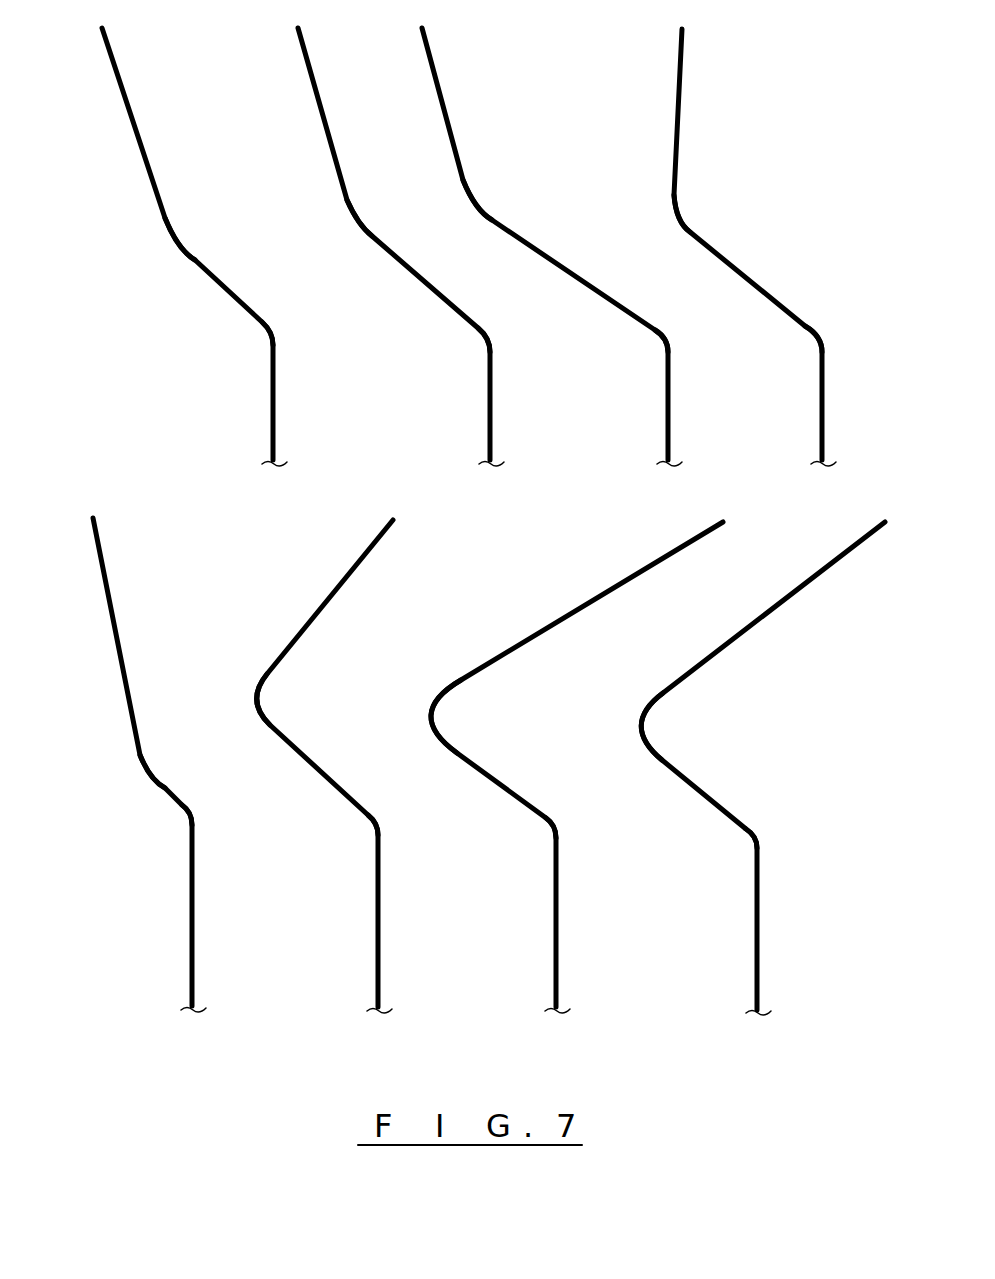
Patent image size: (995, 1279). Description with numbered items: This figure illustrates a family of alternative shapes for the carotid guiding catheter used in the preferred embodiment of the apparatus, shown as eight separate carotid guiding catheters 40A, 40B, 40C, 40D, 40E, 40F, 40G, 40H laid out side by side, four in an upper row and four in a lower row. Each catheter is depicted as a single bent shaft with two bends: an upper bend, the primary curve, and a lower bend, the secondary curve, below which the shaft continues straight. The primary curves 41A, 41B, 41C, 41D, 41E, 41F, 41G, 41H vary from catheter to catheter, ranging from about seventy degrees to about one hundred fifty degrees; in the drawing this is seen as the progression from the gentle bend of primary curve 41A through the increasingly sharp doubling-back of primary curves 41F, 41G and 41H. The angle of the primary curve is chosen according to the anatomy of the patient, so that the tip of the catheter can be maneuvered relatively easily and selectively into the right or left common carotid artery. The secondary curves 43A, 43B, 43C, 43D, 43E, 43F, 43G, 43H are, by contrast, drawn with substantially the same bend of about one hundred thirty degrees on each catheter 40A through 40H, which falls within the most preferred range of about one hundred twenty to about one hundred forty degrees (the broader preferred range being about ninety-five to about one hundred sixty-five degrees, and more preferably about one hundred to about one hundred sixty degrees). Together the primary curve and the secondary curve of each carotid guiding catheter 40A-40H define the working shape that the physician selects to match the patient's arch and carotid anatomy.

The carotid guiding catheter 40A is at (217, 282).
The primary curve of carotid guiding catheter 40A 41A is at (178, 246).
The secondary curve of carotid guiding catheter 40A 43A is at (268, 336).
The carotid guiding catheter 40B is at (420, 282).
The primary curve of carotid guiding catheter 40B 41B is at (362, 227).
The secondary curve of carotid guiding catheter 40B 43B is at (489, 343).
The carotid guiding catheter 40C is at (585, 282).
The primary curve of carotid guiding catheter 40C 41C is at (483, 212).
The secondary curve of carotid guiding catheter 40C 43C is at (667, 345).
The carotid guiding catheter 40D is at (764, 295).
The primary curve of carotid guiding catheter 40D 41D is at (684, 227).
The secondary curve of carotid guiding catheter 40D 43D is at (820, 344).
The carotid guiding catheter 40E is at (192, 938).
The primary curve of carotid guiding catheter 40E 41E is at (142, 762).
The secondary curve of carotid guiding catheter 40E 43E is at (190, 810).
The carotid guiding catheter 40F is at (378, 932).
The primary curve of carotid guiding catheter 40F 41F is at (257, 712).
The secondary curve of carotid guiding catheter 40F 43F is at (374, 822).
The carotid guiding catheter 40G is at (556, 934).
The primary curve of carotid guiding catheter 40G 41G is at (431, 718).
The secondary curve of carotid guiding catheter 40G 43G is at (553, 825).
The carotid guiding catheter 40H is at (757, 936).
The primary curve of carotid guiding catheter 40H 41H is at (640, 728).
The secondary curve of carotid guiding catheter 40H 43H is at (752, 836).